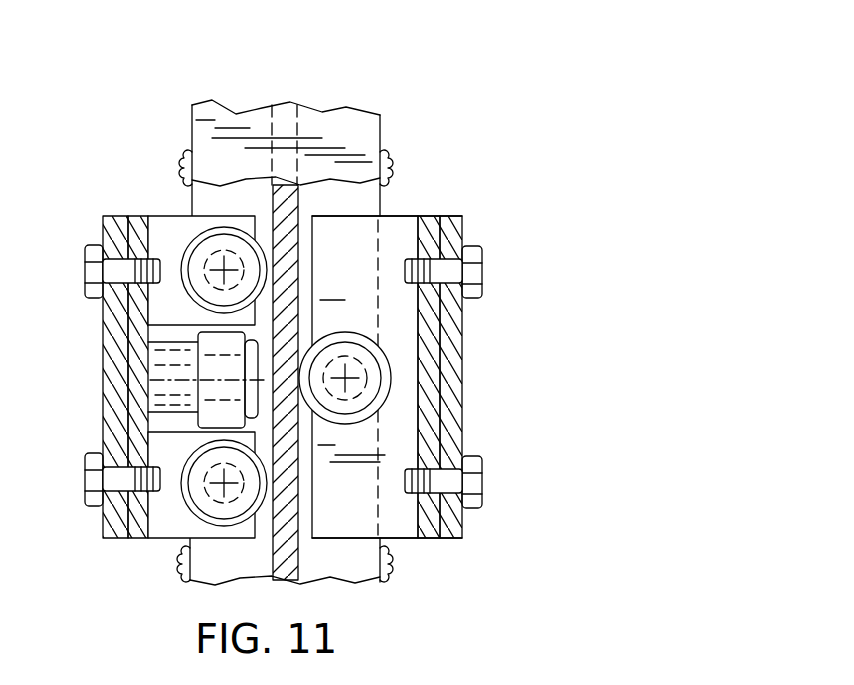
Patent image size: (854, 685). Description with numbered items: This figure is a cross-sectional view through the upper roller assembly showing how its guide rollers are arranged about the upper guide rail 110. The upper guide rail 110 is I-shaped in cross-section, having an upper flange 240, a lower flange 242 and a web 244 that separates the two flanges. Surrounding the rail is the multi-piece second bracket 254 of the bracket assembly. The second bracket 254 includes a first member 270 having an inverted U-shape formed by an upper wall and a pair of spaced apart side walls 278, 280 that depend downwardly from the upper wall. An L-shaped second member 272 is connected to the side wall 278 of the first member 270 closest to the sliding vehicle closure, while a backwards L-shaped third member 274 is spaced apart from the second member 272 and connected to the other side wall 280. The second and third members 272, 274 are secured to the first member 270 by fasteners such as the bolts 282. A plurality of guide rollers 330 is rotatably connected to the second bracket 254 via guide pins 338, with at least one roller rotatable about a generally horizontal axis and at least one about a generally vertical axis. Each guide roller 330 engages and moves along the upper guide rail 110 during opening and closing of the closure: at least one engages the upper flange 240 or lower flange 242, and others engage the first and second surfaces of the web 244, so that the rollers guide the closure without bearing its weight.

The upper guide rail 110 is at (380, 128).
The upper flange 240 is at (313, 128).
The lower flange 242 is at (372, 572).
The web 244 is at (290, 540).
The second bracket 254 is at (465, 404).
The first member 270 is at (122, 218).
The second member 272 is at (425, 535).
The third member 274 is at (140, 527).
The side wall 278 is at (452, 336).
The side wall 280 is at (118, 342).
The bolts 282 is at (95, 250).
The guide rollers 330 is at (205, 226).
The guide pins 338 is at (227, 252).